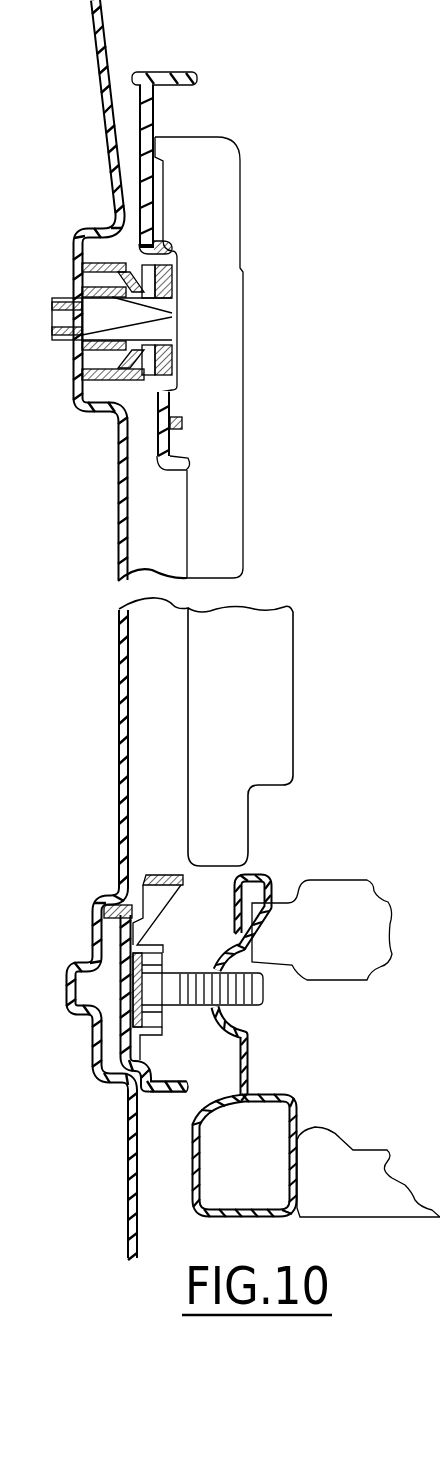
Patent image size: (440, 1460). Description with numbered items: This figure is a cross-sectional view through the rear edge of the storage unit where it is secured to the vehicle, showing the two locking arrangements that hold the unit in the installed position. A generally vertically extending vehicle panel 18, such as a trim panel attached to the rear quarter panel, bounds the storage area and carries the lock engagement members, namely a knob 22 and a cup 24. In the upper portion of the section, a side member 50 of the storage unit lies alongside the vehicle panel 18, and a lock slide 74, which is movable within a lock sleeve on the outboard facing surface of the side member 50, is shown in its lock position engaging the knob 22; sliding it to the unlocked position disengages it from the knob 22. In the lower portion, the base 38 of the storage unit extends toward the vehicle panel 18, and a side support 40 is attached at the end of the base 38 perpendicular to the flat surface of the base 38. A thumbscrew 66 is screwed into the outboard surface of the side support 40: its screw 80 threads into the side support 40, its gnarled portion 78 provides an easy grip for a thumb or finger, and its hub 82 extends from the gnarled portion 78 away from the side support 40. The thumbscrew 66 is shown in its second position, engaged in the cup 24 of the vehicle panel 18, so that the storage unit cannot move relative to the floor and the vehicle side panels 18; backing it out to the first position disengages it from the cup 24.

The vehicle panel 18 is at (113, 222).
The knob 22 is at (90, 341).
The cup 24 is at (108, 1018).
The base 38 is at (360, 1199).
The side support 40 is at (279, 1088).
The side member 50 is at (262, 392).
The thumbscrew 66 is at (164, 862).
The lock slide 74 is at (173, 78).
The gnarled portion 78 is at (180, 1095).
The screw 80 is at (262, 994).
The hub 82 is at (119, 898).